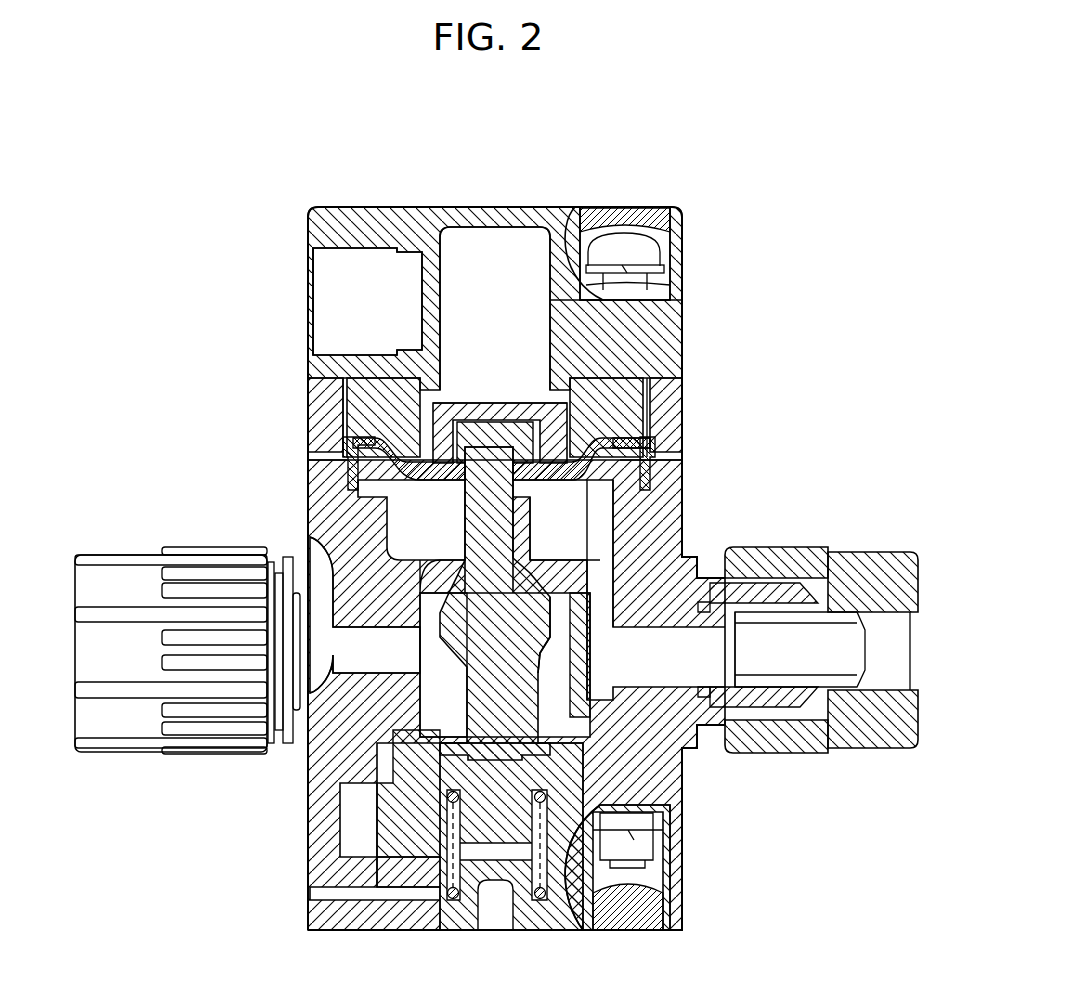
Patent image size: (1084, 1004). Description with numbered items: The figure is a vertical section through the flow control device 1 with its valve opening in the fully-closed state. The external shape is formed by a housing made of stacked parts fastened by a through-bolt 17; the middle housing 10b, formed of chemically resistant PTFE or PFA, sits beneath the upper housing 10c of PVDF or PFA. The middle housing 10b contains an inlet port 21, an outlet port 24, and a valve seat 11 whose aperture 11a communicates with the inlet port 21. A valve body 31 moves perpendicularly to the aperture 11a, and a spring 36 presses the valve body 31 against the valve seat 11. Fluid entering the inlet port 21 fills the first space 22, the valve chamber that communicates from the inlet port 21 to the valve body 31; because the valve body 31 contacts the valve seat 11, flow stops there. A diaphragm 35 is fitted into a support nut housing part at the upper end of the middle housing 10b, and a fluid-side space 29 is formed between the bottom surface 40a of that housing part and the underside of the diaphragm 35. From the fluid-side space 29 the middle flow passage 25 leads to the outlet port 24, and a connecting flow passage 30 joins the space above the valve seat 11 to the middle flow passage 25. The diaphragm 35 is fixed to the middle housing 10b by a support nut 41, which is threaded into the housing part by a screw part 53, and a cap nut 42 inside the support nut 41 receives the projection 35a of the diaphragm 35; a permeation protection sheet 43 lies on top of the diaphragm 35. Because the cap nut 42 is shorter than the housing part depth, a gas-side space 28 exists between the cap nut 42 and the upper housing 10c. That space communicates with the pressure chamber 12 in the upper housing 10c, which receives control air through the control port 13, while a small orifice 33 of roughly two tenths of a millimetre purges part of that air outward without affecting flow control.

The flow control device 1 is at (812, 165).
The middle housing 10b is at (687, 454).
The upper housing 10c is at (687, 340).
The valve seat 11 is at (335, 478).
The aperture 11a is at (445, 578).
The pressure chamber 12 is at (510, 306).
The control port 13 is at (330, 300).
The through-bolt 17 is at (648, 253).
The inlet port 21 is at (364, 660).
The first space 22 is at (457, 703).
The outlet port 24 is at (645, 690).
The middle flow passage 25 is at (613, 522).
The gas-side space 28 is at (500, 410).
The fluid-side space 29 is at (520, 490).
The connecting flow passage 30 is at (575, 548).
The valve body 31 is at (533, 645).
The orifice 33 is at (687, 289).
The diaphragm 35 is at (637, 466).
The projection 35a is at (468, 433).
The spring 36 is at (455, 900).
The bottom surface of the support nut housing part 40a is at (392, 480).
The support nut 41 is at (625, 398).
The cap nut 42 is at (545, 418).
The permeation protection sheet 43 is at (650, 440).
The screw part 53 is at (345, 405).